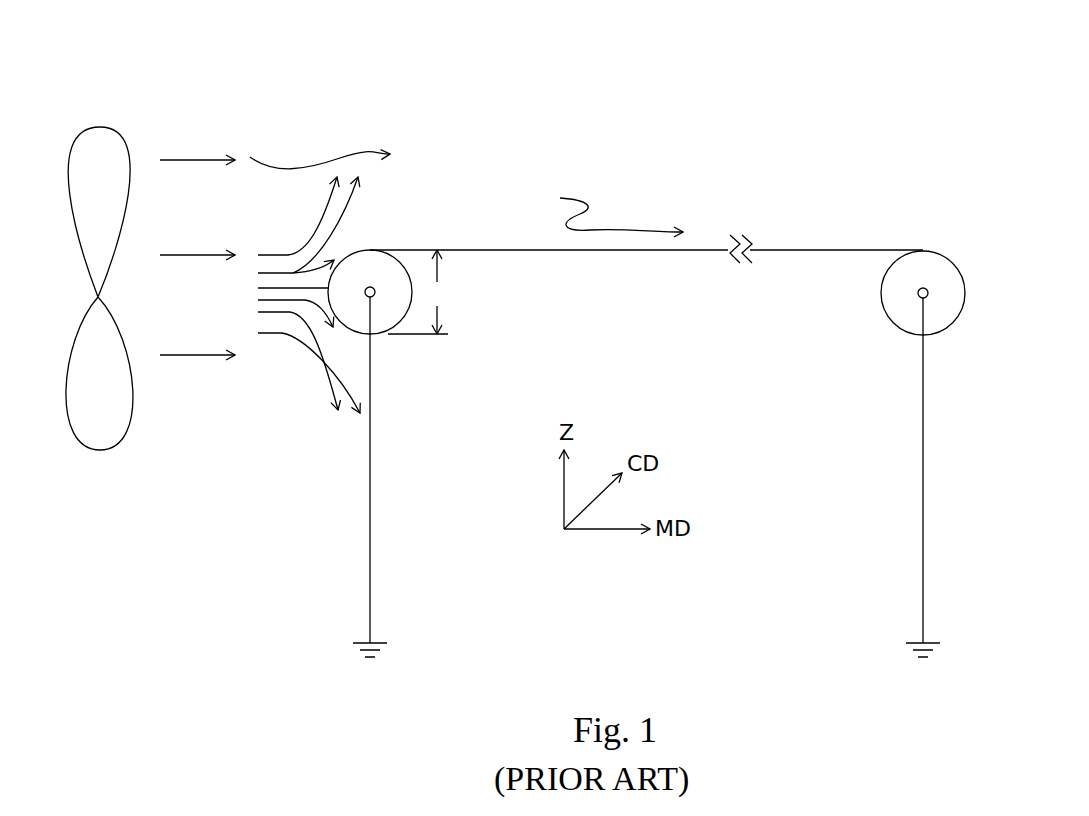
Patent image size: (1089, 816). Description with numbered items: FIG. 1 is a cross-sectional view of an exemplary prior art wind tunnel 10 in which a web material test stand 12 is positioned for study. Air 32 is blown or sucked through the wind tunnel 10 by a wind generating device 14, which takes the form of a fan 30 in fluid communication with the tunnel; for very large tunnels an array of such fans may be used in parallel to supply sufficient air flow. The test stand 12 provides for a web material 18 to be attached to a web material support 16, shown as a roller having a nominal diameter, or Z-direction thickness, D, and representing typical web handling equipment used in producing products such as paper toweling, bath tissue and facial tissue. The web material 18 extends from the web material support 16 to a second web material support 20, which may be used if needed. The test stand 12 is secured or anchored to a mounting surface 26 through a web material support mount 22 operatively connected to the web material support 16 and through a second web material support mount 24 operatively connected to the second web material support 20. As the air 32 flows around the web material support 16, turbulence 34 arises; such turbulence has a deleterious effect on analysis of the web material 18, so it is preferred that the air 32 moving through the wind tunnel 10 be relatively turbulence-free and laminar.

The wind tunnel 10 is at (975, 72).
The web material test stand 12 is at (960, 225).
The wind generating device 14 is at (143, 137).
The web material support 16 is at (387, 267).
The web material 18 is at (705, 250).
The second web material support 20 is at (950, 295).
The web material support mount 22 is at (371, 447).
The second web material support mount 24 is at (922, 466).
The mounting surface 26 is at (373, 641).
The fan 30 is at (113, 416).
The air 32 is at (247, 137).
The turbulence 34 is at (308, 398).